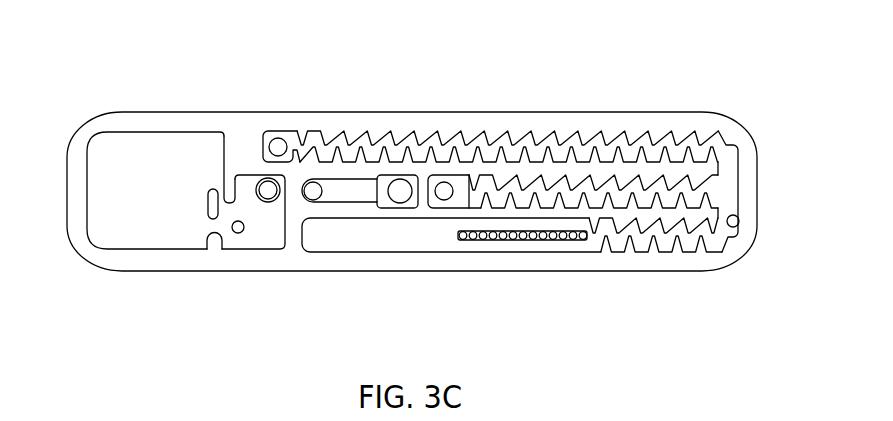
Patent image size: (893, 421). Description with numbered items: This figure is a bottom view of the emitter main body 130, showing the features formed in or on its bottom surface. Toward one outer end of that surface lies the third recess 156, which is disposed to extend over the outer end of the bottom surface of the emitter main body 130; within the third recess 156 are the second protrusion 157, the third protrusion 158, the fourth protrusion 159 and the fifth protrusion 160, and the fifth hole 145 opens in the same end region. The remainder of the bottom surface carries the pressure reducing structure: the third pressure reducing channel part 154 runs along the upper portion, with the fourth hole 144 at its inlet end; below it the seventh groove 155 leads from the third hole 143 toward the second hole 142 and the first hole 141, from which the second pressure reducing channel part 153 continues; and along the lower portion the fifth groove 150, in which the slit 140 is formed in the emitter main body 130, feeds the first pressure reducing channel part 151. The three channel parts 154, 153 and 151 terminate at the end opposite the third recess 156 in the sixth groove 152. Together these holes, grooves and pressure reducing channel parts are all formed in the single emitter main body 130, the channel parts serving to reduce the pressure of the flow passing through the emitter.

The emitter main body 130 is at (120, 110).
The third recess 156 is at (173, 134).
The second protrusion 157 is at (232, 199).
The fifth hole 145 is at (270, 202).
The fourth protrusion 159 is at (212, 244).
The fifth protrusion 160 is at (212, 210).
The third protrusion 158 is at (237, 233).
The fourth hole 144 is at (277, 139).
The third pressure reducing channel part 154 is at (482, 131).
The second pressure reducing channel part 153 is at (574, 176).
The sixth groove 152 is at (731, 238).
The first pressure reducing channel part 151 is at (645, 252).
The fifth groove 150 is at (323, 245).
The slit 140 is at (513, 241).
The first hole 141 is at (446, 200).
The second hole 142 is at (401, 179).
The seventh groove 155 is at (363, 200).
The third hole 143 is at (313, 183).